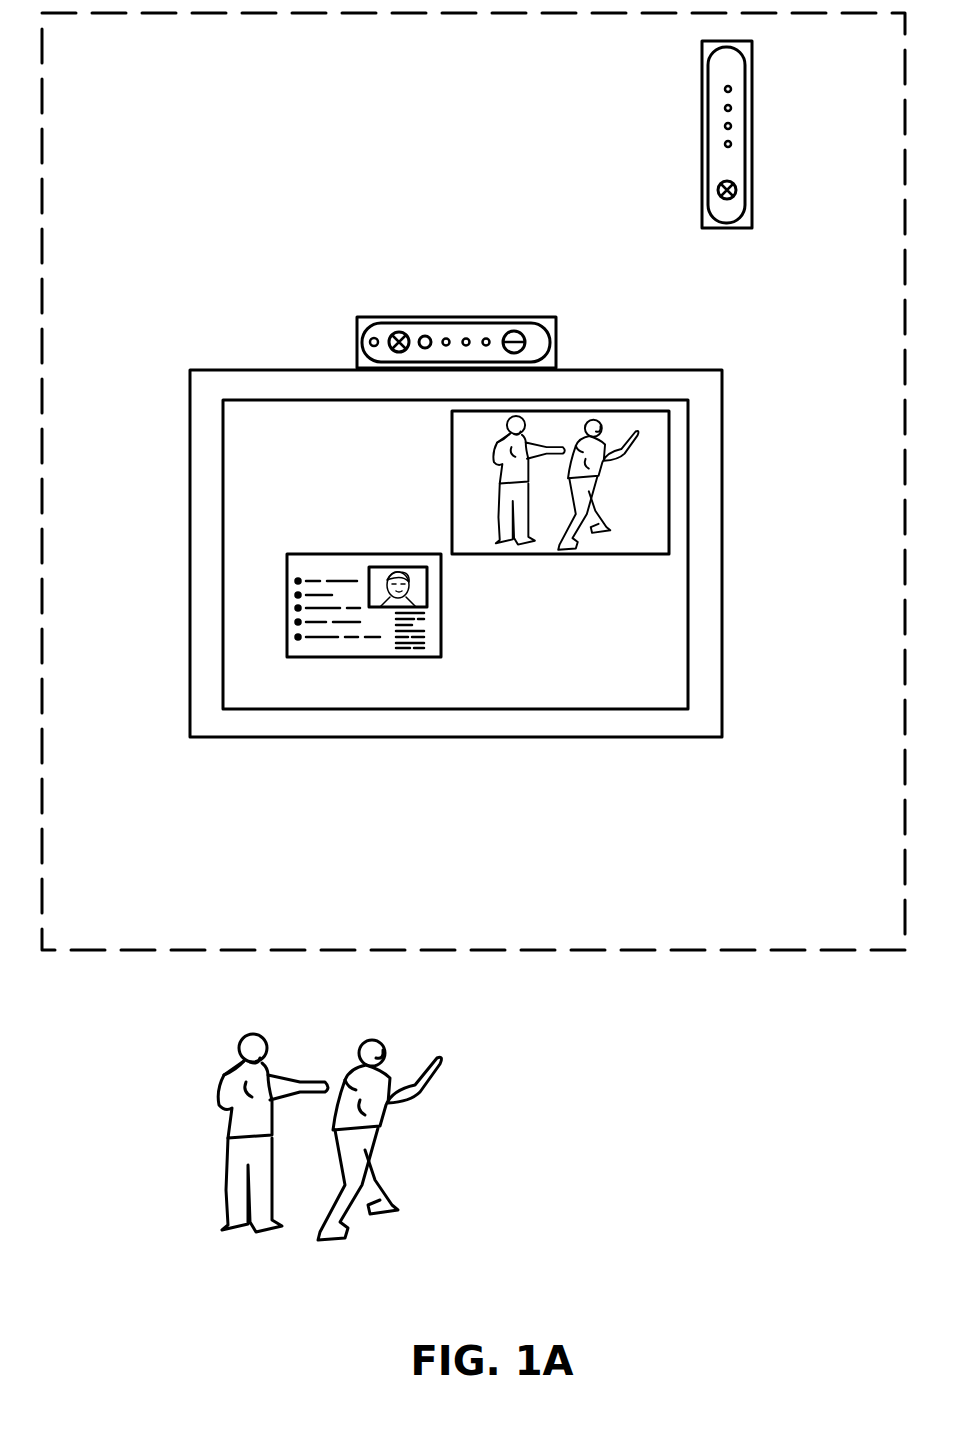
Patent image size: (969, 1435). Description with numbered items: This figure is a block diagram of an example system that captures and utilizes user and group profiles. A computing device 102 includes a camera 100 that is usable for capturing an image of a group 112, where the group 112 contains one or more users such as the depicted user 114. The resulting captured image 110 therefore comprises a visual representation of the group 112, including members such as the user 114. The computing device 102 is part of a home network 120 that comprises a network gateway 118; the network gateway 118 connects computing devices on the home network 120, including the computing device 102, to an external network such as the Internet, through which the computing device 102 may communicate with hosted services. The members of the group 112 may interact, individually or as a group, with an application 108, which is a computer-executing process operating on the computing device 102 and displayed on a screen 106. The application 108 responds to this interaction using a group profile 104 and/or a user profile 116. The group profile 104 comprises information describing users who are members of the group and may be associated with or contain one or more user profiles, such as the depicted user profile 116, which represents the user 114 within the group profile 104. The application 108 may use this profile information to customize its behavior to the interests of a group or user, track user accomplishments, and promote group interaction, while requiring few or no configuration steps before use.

The camera 100 is at (425, 336).
The computing device 102 is at (455, 317).
The group profile 104 is at (287, 602).
The screen 106 is at (236, 737).
The application 108 is at (457, 709).
The captured image 110 is at (628, 521).
The group 112 is at (285, 1196).
The user 114 is at (232, 1068).
The user profile 116 is at (396, 567).
The network gateway 118 is at (702, 130).
The home network 120 is at (473, 481).